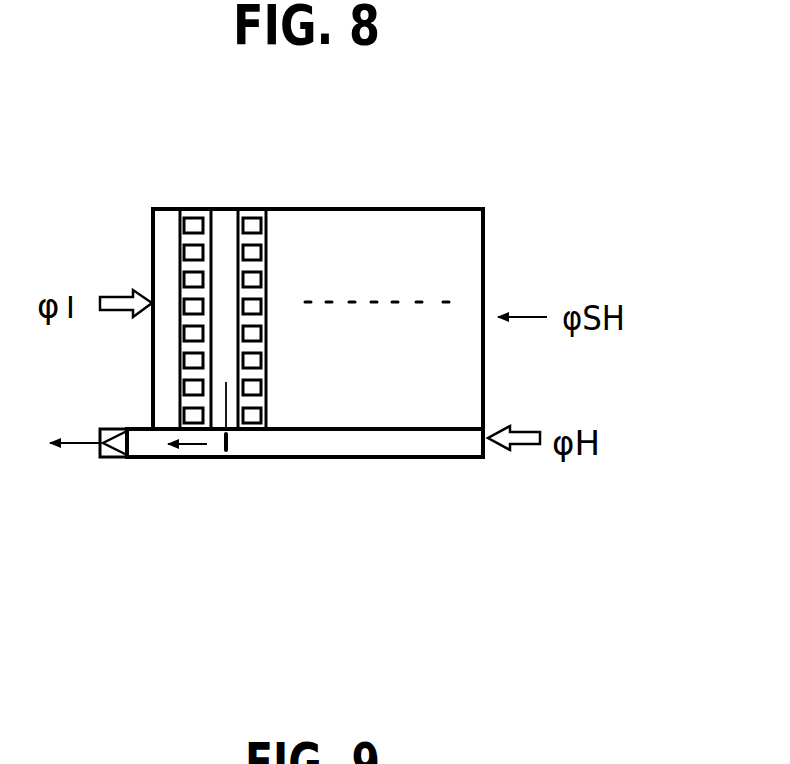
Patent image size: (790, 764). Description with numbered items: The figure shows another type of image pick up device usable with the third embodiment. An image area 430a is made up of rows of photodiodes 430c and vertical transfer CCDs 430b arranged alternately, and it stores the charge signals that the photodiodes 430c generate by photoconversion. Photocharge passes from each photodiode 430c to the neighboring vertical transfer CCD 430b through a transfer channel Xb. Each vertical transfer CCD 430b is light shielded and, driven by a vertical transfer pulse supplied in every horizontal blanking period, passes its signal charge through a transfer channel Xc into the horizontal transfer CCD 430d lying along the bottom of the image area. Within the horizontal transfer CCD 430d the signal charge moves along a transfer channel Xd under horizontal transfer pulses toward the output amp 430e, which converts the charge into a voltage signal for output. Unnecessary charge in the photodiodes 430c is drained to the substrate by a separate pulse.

The image area 430a is at (458, 237).
The vertical transfer CCD 430b is at (165, 226).
The photodiode 430c is at (250, 226).
The horizontal transfer CCD 430d is at (412, 442).
The output amp 430e is at (112, 461).
The transfer channel of photocharge Xb is at (229, 333).
The transfer channel for signal charge Xc is at (228, 417).
The transfer channel for signal charge in the horizontal transfer CCD Xd is at (183, 446).